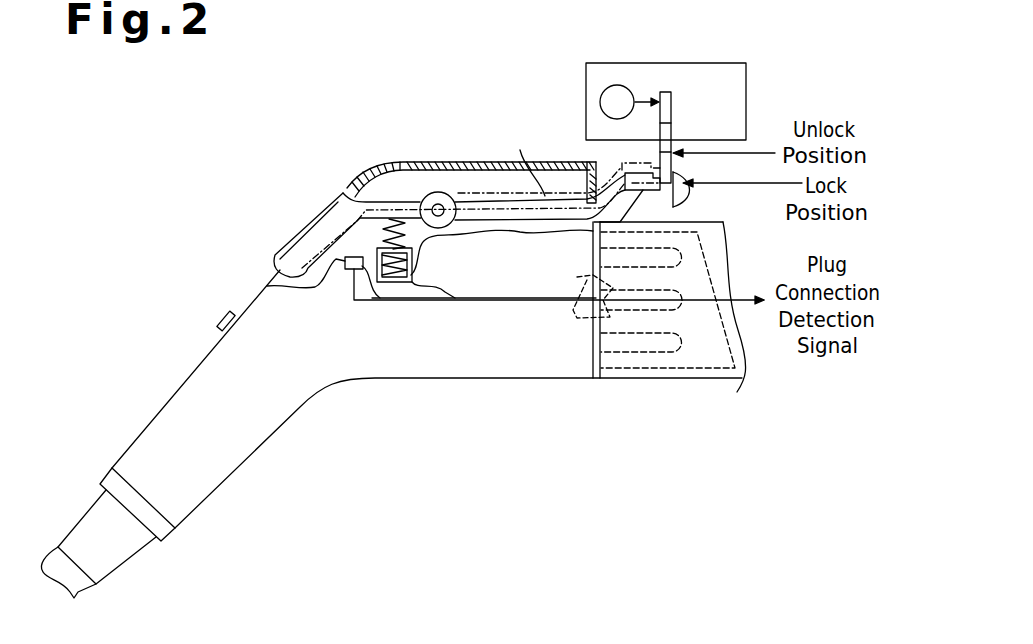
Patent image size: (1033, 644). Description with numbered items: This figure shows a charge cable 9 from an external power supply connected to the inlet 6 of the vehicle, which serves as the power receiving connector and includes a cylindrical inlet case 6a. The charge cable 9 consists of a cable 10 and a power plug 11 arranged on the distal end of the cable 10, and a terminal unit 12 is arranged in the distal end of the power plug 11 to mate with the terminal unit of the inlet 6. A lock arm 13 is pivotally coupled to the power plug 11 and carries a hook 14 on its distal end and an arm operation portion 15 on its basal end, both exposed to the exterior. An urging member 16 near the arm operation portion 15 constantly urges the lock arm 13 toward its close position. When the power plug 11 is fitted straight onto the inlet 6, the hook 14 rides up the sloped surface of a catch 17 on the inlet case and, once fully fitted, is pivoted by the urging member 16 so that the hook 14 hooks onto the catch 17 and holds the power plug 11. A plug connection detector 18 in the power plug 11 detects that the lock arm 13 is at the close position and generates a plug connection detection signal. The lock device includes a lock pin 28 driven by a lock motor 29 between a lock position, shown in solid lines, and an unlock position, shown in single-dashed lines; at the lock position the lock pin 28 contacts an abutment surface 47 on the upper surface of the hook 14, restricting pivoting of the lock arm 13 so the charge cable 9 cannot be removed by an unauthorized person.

The inlet 6 is at (635, 381).
The inlet case 6a is at (684, 381).
The charge cable 9 is at (143, 428).
The cable 10 is at (86, 593).
The power plug 11 is at (413, 368).
The terminal unit 12 is at (600, 318).
The lock arm 13 is at (521, 196).
The hook 14 is at (688, 196).
The arm operation portion 15 is at (296, 223).
The urging member 16 is at (426, 250).
The catch 17 is at (586, 77).
The plug connection detector 18 is at (338, 280).
The lock pin 28 is at (674, 132).
The lock motor 29 is at (600, 102).
The abutment surface 47 is at (642, 174).